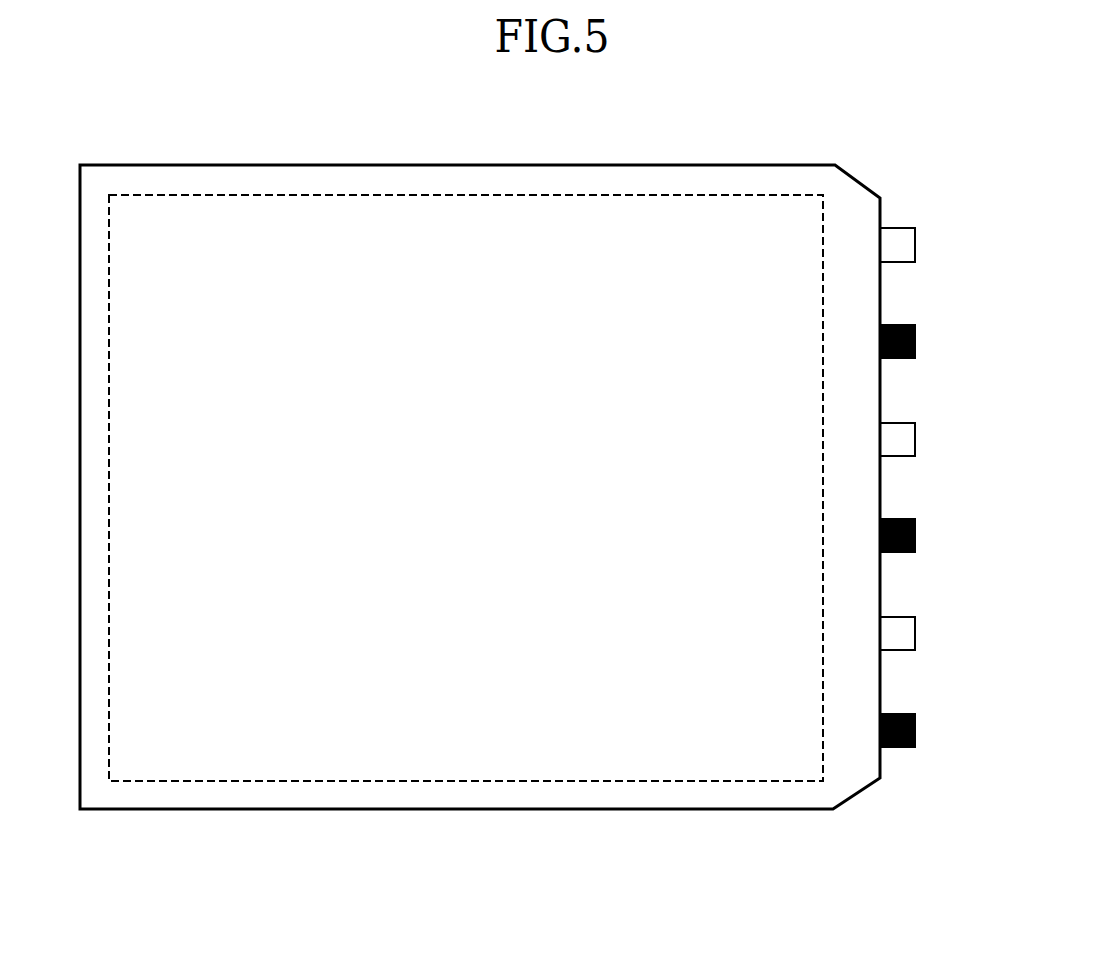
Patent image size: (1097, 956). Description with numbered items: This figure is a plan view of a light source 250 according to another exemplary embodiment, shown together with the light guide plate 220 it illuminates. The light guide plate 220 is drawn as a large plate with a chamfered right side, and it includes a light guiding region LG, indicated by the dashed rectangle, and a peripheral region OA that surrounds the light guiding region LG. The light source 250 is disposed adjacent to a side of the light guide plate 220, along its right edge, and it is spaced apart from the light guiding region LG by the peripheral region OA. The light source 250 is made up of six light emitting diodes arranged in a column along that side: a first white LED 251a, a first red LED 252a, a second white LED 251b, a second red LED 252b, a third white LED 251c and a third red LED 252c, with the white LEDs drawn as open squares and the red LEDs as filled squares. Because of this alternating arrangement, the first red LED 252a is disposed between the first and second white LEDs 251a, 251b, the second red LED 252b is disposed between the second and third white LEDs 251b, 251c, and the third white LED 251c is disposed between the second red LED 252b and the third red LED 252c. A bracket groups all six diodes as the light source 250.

The light guide plate 220 is at (514, 482).
The light source 250 is at (987, 476).
The first white LED 251a is at (907, 243).
The first red LED 252a is at (915, 340).
The second white LED 251b is at (907, 438).
The second red LED 252b is at (915, 535).
The third white LED 251c is at (907, 632).
The third red LED 252c is at (954, 730).
The light guiding region LG is at (520, 781).
The peripheral region OA is at (845, 738).